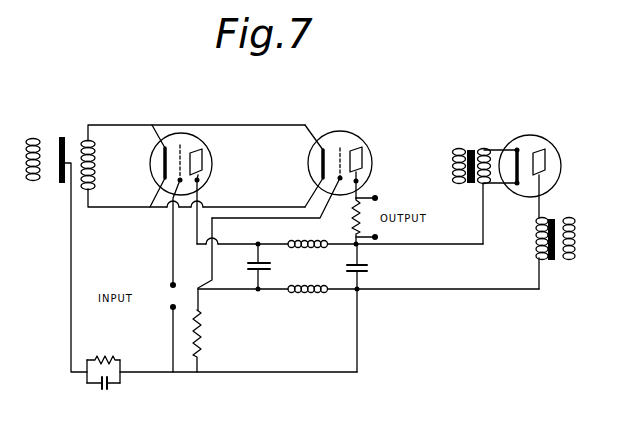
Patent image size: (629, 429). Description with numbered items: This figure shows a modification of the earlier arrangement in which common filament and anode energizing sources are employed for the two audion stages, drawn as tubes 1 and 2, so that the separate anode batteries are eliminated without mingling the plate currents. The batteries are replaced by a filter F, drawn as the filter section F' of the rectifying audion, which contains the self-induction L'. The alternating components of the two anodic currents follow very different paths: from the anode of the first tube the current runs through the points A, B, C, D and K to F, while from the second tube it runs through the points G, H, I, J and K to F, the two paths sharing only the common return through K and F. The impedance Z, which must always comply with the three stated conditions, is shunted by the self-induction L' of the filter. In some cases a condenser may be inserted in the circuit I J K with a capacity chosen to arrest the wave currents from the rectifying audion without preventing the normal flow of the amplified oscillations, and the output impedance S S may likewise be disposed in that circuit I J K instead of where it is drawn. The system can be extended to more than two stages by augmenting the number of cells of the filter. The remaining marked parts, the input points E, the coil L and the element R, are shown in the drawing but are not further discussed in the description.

The filter F is at (67, 254).
The circuit point A is at (202, 196).
The input terminals E is at (166, 275).
The circuit point B is at (262, 232).
The circuit point C is at (178, 328).
The inductance coil L is at (308, 233).
The self-induction L' is at (308, 303).
The filter F' is at (327, 266).
The circuit point D is at (208, 264).
The impedance Z is at (205, 341).
The circuit point K is at (238, 385).
The circuit point J is at (359, 338).
The circuit point I is at (361, 301).
The resistance R is at (103, 358).
The first electron tube 1 is at (181, 151).
The second electron tube 2 is at (292, 161).
The circuit point G is at (365, 172).
The output impedance S is at (376, 219).
The circuit point H is at (346, 222).